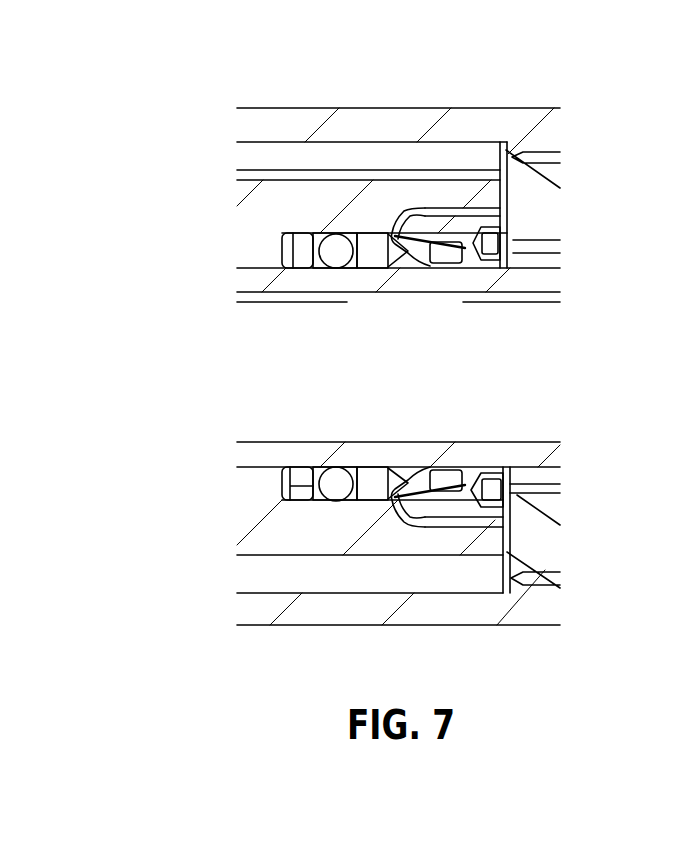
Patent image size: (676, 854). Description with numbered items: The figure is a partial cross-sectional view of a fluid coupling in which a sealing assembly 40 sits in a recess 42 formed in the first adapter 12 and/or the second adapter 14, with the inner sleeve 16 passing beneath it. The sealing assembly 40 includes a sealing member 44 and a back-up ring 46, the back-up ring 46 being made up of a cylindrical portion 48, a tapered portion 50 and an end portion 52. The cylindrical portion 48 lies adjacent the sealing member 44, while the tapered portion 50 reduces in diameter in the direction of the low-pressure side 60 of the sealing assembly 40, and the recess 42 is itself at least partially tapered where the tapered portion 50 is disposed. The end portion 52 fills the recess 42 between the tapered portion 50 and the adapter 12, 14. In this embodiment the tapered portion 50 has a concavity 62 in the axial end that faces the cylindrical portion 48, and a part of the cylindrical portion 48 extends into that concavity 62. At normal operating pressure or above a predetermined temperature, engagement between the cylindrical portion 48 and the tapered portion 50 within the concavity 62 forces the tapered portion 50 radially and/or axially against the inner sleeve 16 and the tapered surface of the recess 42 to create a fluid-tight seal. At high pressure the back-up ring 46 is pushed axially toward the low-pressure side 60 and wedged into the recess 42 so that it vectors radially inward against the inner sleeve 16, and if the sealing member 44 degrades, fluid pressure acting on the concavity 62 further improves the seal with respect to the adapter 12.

The first adapter 12 is at (248, 243).
The second adapter 14 is at (368, 201).
The inner sleeve 16 is at (238, 270).
The sealing assembly 40 is at (370, 194).
The recess 42 is at (302, 233).
The sealing member 44 is at (332, 244).
The back-up ring 46 is at (430, 223).
The cylindrical portion 48 is at (366, 244).
The tapered portion 50 is at (396, 226).
The end portion 52 is at (445, 257).
The low-pressure side 60 is at (475, 285).
The concavity 62 is at (395, 258).